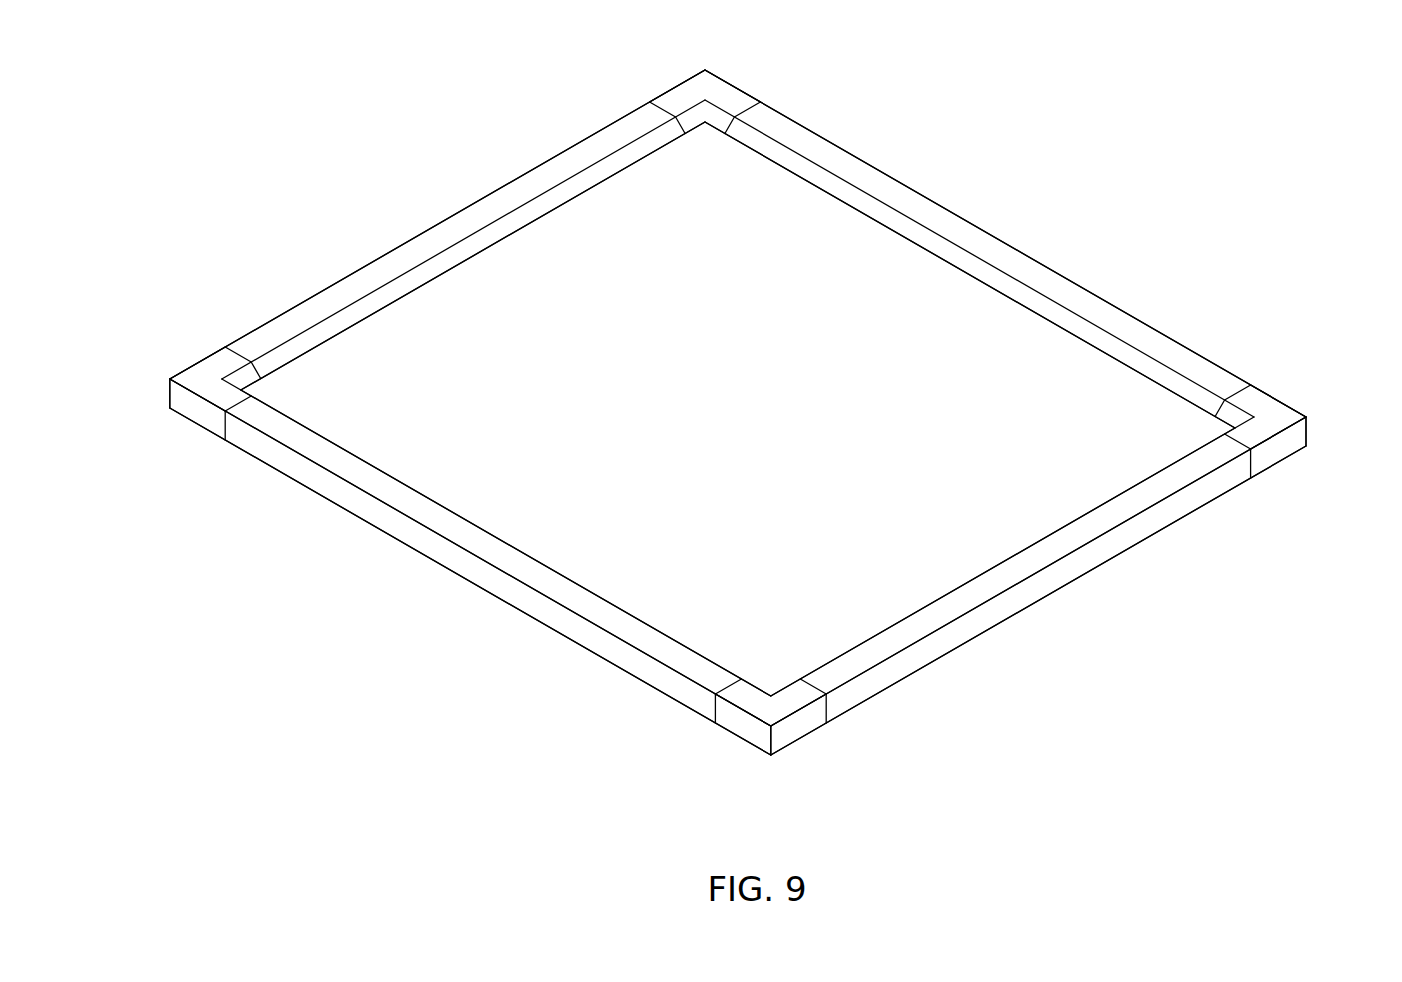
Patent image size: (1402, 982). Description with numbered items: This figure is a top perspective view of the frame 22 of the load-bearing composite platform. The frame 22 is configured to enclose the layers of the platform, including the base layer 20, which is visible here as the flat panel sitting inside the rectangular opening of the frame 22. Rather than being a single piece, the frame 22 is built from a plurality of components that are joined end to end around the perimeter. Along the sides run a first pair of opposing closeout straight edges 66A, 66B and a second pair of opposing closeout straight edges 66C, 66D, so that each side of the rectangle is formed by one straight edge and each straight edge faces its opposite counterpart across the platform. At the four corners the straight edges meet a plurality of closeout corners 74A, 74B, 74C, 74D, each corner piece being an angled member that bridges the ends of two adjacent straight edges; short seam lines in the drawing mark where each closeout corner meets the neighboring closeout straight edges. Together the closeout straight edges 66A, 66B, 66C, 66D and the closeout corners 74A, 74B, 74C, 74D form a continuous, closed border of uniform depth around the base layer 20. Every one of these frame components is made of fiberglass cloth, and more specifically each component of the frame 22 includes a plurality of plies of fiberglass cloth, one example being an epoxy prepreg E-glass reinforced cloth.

The base layer 20 is at (1068, 383).
The frame 22 is at (336, 122).
The closeout straight edge 66A is at (948, 221).
The closeout straight edge 66B is at (380, 494).
The closeout straight edge 66C is at (1020, 573).
The closeout straight edge 66D is at (418, 243).
The closeout corner 74A is at (1280, 415).
The closeout corner 74B is at (777, 708).
The closeout corner 74C is at (205, 380).
The closeout corner 74D is at (707, 90).